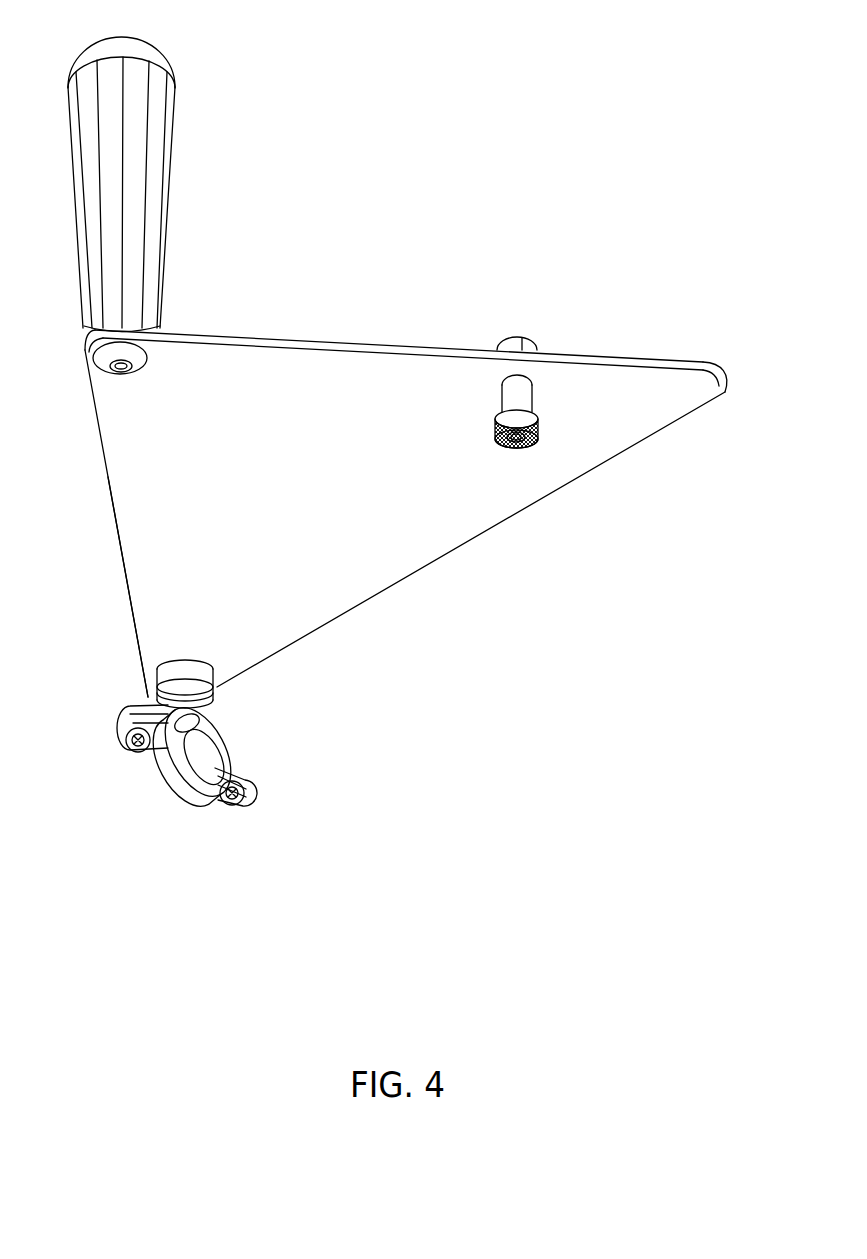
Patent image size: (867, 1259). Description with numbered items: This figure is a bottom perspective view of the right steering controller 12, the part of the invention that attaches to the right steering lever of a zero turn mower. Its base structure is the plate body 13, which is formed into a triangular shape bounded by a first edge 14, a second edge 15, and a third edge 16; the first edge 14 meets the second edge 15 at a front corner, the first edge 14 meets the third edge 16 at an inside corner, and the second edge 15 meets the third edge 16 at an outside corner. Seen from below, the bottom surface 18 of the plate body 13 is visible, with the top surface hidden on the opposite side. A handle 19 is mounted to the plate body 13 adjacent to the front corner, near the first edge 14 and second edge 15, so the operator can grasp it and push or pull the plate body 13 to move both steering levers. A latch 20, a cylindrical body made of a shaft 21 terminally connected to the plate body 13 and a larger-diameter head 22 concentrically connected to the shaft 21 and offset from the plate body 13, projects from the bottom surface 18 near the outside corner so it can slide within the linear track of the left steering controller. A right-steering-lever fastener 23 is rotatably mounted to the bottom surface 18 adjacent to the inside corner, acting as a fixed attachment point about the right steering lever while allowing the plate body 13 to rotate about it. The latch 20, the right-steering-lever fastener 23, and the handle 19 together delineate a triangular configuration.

The right steering controller 12 is at (445, 185).
The plate body 13 is at (122, 478).
The first edge 14 is at (128, 607).
The second edge 15 is at (422, 346).
The third edge 16 is at (418, 573).
The bottom surface 18 is at (396, 486).
The handle 19 is at (172, 127).
The latch 20 is at (398, 522).
The shaft 21 is at (530, 393).
The head 22 is at (505, 447).
The right-steering-lever fastener 23 is at (252, 767).